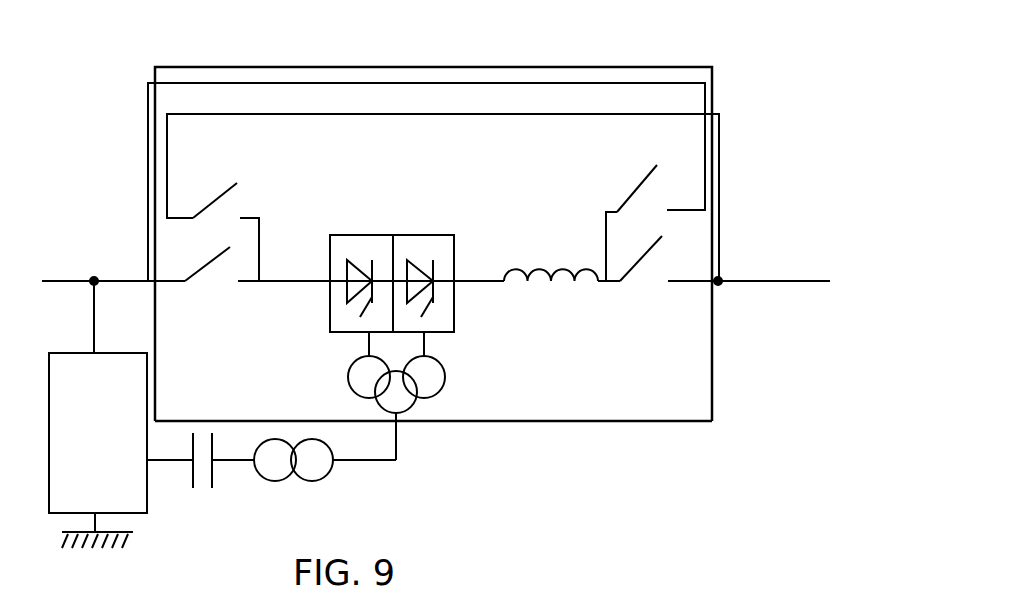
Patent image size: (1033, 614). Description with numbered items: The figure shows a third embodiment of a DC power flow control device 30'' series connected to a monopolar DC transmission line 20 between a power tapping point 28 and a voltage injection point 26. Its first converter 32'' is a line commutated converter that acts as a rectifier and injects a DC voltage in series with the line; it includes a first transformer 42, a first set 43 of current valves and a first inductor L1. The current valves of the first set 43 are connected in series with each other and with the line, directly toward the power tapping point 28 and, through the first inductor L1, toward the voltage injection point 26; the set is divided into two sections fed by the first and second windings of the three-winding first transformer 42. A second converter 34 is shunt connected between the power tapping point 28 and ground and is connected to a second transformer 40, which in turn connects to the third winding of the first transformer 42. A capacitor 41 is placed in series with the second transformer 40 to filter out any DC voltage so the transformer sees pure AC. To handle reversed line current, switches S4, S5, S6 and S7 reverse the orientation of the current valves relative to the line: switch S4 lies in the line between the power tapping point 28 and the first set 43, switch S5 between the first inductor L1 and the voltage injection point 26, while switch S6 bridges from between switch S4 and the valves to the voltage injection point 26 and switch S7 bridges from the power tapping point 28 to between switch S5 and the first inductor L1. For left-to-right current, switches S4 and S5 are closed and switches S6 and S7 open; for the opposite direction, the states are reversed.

The transmission line 20 is at (60, 280).
The power tapping point 28 is at (95, 279).
The voltage injection point 26 is at (720, 280).
The DC power flow control device 30'' is at (504, 210).
The first converter 32'' is at (433, 479).
The second converter 34 is at (98, 450).
The second transformer 40 is at (325, 480).
The capacitor 41 is at (200, 477).
The first transformer 42 is at (376, 396).
The first set of current valves 43 is at (407, 235).
The first inductor L1 is at (551, 257).
The switch S4 is at (222, 286).
The switch S5 is at (669, 275).
The switch S6 is at (443, 197).
The switch S7 is at (426, 182).